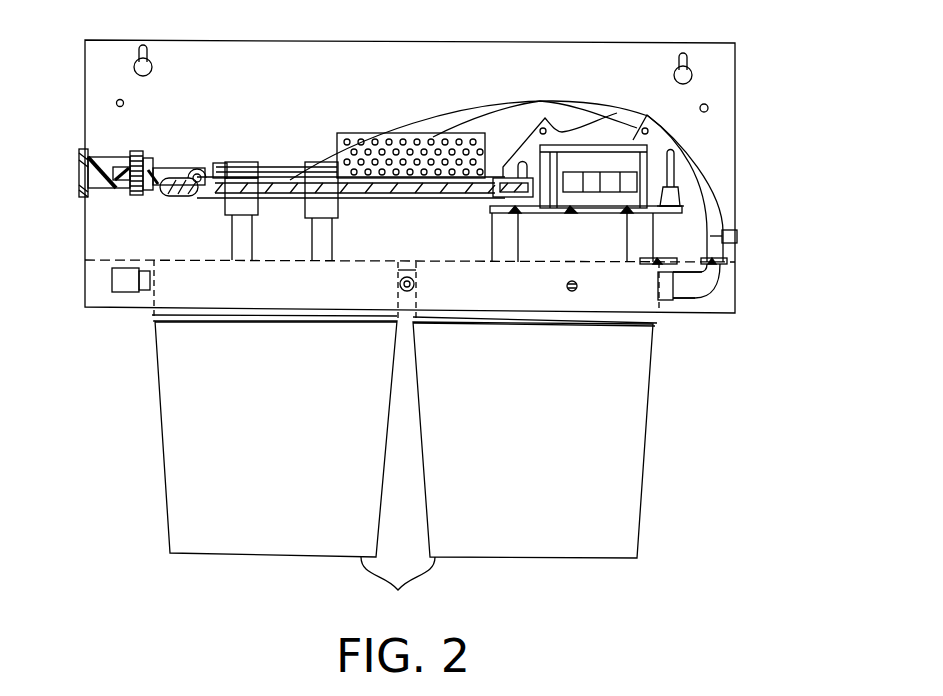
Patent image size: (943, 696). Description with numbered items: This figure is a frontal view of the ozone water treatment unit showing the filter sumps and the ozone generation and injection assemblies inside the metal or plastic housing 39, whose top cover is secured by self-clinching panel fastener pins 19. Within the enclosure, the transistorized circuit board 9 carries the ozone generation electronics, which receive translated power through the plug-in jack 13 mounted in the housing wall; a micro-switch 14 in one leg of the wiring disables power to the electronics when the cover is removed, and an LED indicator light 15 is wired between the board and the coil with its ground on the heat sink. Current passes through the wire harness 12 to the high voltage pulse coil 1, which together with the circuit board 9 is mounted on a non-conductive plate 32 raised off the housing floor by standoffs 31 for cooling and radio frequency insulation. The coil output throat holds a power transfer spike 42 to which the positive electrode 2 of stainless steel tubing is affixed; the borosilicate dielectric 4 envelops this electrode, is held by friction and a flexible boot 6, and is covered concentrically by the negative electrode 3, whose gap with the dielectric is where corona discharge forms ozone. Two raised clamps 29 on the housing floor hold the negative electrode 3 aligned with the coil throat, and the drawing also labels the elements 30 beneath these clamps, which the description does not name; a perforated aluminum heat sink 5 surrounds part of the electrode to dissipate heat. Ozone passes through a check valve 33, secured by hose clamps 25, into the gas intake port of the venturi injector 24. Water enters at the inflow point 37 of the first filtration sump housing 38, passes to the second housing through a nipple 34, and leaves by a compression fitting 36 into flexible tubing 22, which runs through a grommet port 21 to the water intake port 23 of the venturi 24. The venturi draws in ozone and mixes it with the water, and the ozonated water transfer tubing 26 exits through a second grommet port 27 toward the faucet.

The pulse coil 1 is at (650, 120).
The positive electrode 2 is at (500, 194).
The negative electrode 3 is at (214, 200).
The dielectric 4 is at (176, 197).
The heat sink 5 is at (356, 133).
The flexible boot 6 is at (522, 165).
The transistorized circuit board 9 is at (567, 158).
The wire harness 12 is at (594, 186).
The plug-in jack 13 is at (740, 236).
The micro-switch 14 is at (660, 265).
The LED indicator light 15 is at (566, 286).
The self-clinching panel fastener pin 19 is at (708, 107).
The grommet port 21 is at (723, 267).
The flexible tubing 22 is at (492, 107).
The water intake port 23 is at (218, 163).
The venturi injector 24 is at (190, 168).
The hose clamps 25 is at (137, 152).
The ozonated water transfer tubing 26 is at (108, 156).
The grommet port 27 is at (84, 150).
The raised clamps 29 is at (250, 210).
The leg 30 is at (240, 238).
The standoffs 31 is at (576, 237).
The non-conductive plate 32 is at (688, 207).
The check valve 33 is at (199, 168).
The nipple 34 is at (402, 278).
The compression fitting 36 is at (692, 292).
The inflow point 37 is at (126, 292).
The filtration sump housings 38 is at (398, 589).
The housing 39 is at (737, 48).
The power transfer spike 42 is at (527, 208).